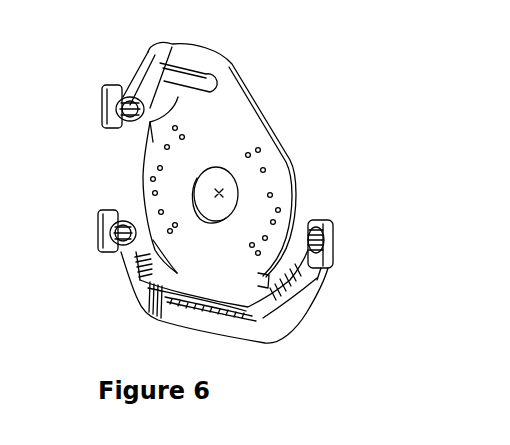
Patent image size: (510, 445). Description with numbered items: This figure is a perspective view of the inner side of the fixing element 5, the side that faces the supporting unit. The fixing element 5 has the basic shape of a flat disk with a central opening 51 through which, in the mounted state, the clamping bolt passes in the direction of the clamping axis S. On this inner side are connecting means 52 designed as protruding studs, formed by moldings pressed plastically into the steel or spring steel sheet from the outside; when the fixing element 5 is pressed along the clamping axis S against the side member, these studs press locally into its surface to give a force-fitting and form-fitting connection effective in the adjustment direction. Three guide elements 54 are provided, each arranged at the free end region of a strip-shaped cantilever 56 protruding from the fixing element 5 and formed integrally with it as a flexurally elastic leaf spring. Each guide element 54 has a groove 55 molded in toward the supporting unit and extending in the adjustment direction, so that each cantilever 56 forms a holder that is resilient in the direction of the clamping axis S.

The fixing element 5 is at (356, 73).
The central opening 51 is at (238, 178).
The connecting means 52 is at (159, 211).
The guide element 54 is at (103, 99).
The groove 55 is at (123, 97).
The cantilever 56 is at (147, 78).
The clamping axis S is at (222, 193).